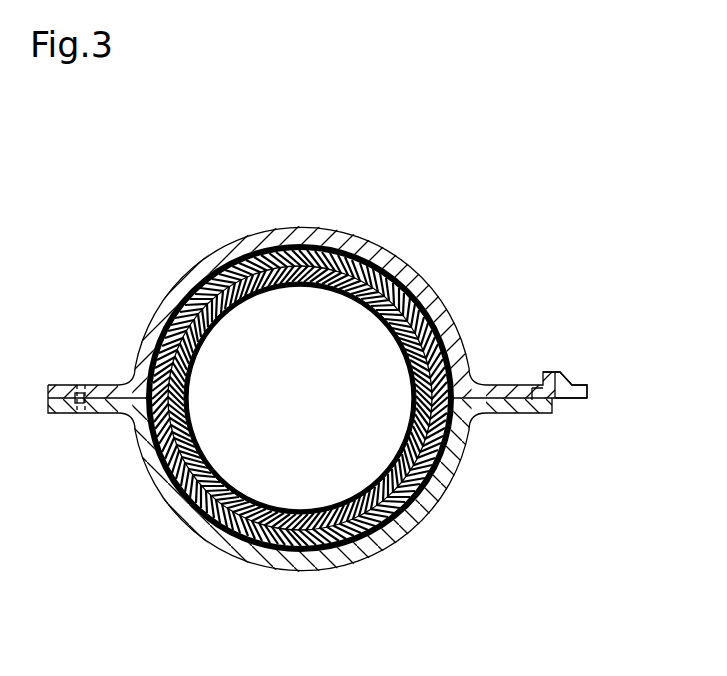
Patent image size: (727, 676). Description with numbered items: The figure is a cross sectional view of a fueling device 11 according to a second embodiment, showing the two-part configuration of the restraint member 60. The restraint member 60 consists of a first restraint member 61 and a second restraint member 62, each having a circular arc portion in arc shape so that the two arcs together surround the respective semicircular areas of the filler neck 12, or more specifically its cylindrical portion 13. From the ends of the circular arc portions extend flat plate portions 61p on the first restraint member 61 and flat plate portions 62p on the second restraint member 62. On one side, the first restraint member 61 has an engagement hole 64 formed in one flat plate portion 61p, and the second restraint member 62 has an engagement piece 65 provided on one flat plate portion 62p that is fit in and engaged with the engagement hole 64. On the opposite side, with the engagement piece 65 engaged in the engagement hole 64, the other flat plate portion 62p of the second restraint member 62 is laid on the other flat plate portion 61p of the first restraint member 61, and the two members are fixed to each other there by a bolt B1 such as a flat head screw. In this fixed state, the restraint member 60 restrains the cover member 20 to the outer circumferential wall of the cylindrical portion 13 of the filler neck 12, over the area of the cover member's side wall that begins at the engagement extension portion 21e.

The hose clamp assembly 11 is at (557, 166).
The restraint member 60 is at (336, 379).
The first restraint member 61 is at (362, 236).
The second restraint member 62 is at (377, 560).
The flat plate portion 61p is at (112, 385).
The flat plate portion 62p is at (104, 414).
The bolt B1 is at (80, 414).
The engagement hole 64 is at (546, 402).
The engagement piece 65 is at (552, 370).
The cover member 20 is at (372, 306).
The engagement extension portion 21e is at (318, 287).
The filler neck 12 is at (300, 398).
The cylindrical portion 13 is at (403, 329).